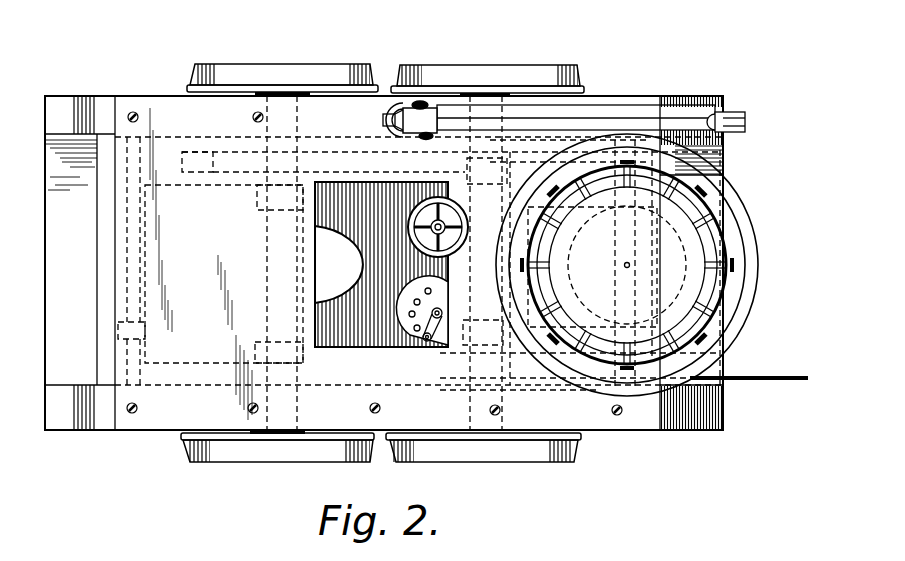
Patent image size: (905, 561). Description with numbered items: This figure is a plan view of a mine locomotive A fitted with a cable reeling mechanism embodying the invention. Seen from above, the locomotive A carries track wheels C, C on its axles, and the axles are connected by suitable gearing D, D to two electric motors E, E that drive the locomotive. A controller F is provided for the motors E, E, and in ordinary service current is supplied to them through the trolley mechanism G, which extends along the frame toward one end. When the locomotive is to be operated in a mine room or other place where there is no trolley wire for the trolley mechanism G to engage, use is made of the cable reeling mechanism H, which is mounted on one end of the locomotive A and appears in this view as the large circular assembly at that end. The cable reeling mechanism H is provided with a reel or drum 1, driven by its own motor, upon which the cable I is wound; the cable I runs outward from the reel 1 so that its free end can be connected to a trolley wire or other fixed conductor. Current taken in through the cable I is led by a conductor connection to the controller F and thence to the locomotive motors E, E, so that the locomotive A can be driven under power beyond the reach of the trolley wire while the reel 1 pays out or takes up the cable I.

The mine locomotive A is at (407, 134).
The track wheels C is at (406, 68).
The gearing D is at (220, 152).
The electric motors E is at (200, 239).
The controller F is at (420, 300).
The trolley mechanism G is at (598, 112).
The cable reeling mechanism H is at (753, 197).
The reel 1 is at (752, 226).
The cable I is at (762, 376).